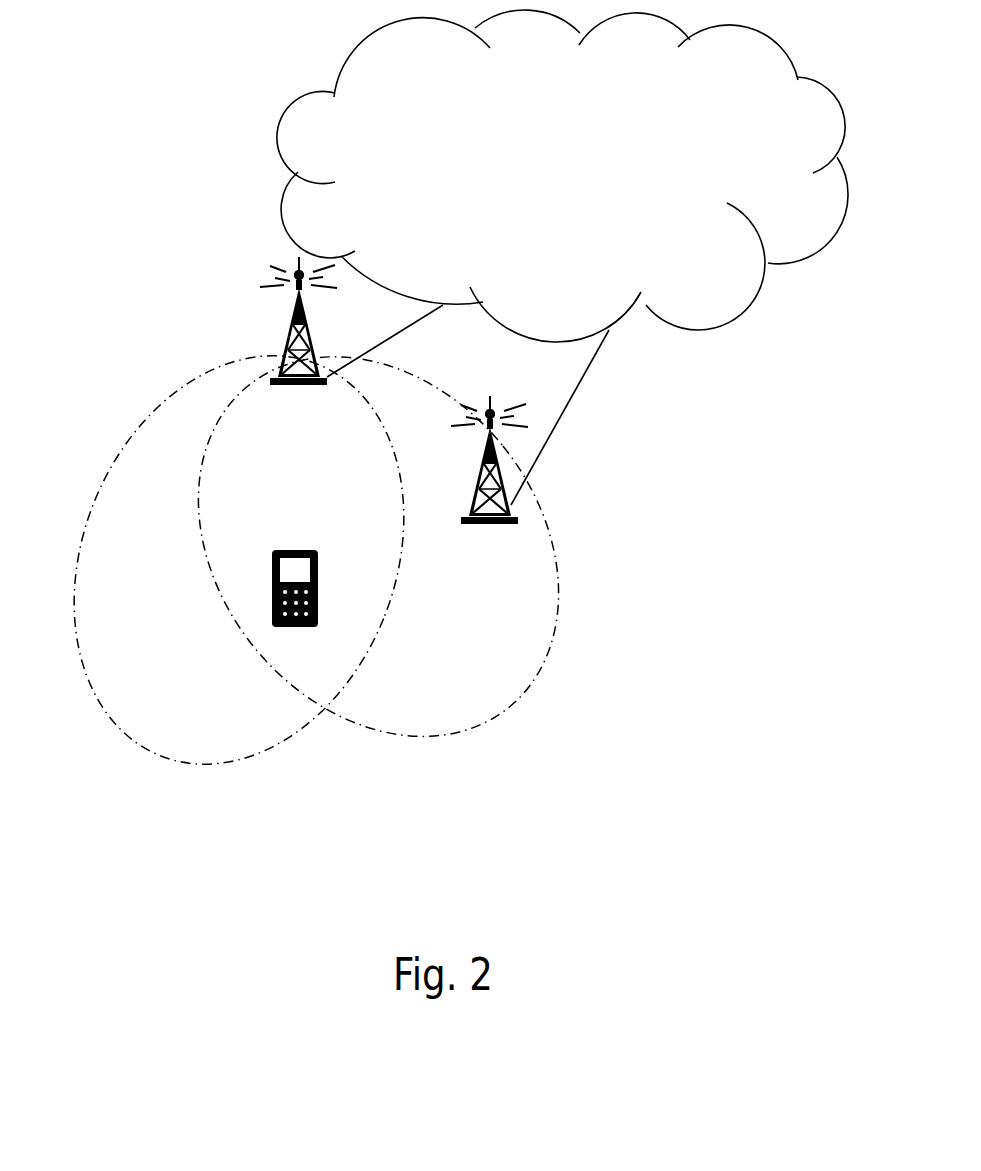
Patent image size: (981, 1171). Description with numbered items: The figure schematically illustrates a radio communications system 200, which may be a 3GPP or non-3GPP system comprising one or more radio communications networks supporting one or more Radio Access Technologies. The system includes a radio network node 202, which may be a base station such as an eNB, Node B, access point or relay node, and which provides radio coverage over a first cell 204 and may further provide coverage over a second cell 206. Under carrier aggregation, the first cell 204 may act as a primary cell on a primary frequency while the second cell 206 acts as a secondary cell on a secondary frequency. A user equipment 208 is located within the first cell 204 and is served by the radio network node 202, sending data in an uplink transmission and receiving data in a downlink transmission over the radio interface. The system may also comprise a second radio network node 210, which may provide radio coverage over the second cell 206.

The radio communications system 200 is at (205, 122).
The radio network node 202 is at (290, 330).
The first cell 204 is at (168, 402).
The second cell 206 is at (557, 622).
The user equipment 208 is at (292, 550).
The second radio network node 210 is at (510, 505).